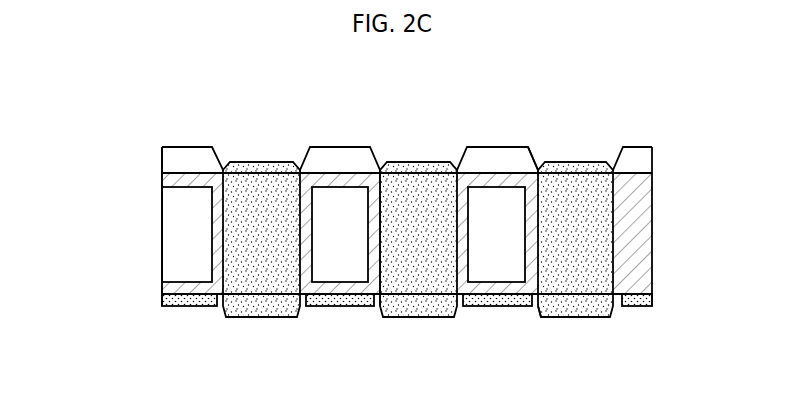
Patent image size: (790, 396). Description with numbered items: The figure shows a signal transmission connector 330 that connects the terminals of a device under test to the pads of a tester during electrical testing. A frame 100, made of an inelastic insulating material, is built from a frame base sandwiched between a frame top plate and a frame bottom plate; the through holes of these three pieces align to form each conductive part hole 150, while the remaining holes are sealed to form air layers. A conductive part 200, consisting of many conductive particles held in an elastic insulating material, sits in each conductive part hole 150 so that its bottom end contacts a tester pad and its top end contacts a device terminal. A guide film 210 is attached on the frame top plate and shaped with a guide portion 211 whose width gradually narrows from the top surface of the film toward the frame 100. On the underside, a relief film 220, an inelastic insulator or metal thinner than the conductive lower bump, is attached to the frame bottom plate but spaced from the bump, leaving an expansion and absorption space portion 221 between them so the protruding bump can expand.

The frame 100 is at (642, 235).
The conductive part hole 150 is at (380, 223).
The conductive part 200 is at (265, 200).
The guide film 210 is at (642, 158).
The guide portion 211 is at (530, 150).
The relief film 220 is at (653, 298).
The expansion and absorption space portion 221 is at (535, 298).
The signal transmission connector 330 is at (130, 219).